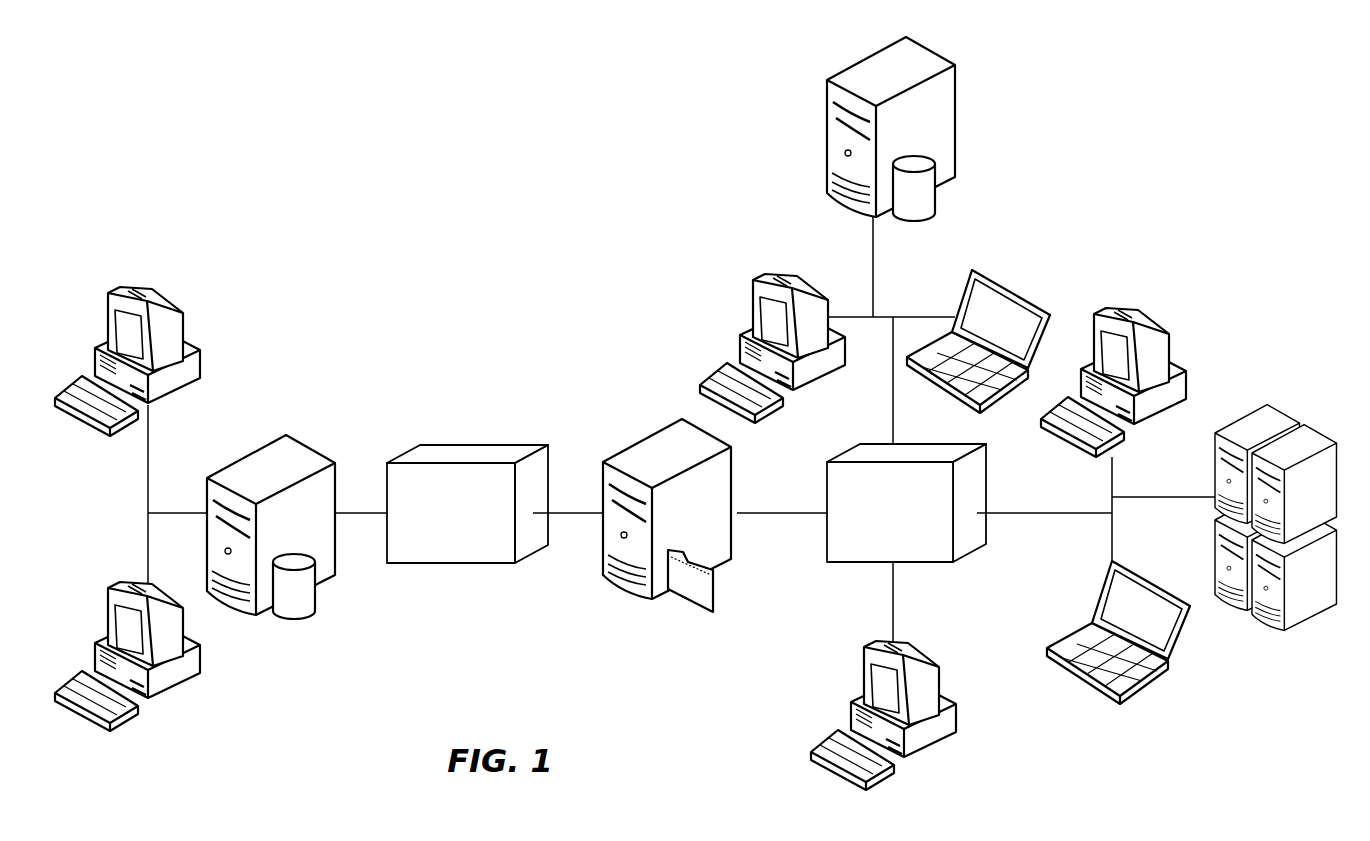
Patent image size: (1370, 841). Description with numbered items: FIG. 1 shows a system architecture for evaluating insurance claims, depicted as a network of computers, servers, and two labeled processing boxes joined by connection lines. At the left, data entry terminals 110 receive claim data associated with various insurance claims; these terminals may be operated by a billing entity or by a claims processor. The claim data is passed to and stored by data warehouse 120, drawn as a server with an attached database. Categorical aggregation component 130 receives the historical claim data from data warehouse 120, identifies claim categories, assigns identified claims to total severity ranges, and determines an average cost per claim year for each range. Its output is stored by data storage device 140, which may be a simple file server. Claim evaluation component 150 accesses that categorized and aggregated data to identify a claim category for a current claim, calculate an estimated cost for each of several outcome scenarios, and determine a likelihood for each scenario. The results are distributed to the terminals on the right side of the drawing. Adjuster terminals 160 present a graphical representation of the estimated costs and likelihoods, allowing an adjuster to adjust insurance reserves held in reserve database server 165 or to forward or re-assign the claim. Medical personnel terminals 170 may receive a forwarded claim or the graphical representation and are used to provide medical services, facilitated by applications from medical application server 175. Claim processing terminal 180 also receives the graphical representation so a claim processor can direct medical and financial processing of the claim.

The data entry terminals 110 is at (160, 274).
The data warehouse 120 is at (290, 457).
The categorical aggregation component 130 is at (455, 452).
The data storage device 140 is at (668, 448).
The claim evaluation component 150 is at (848, 566).
The adjuster terminals 160 is at (700, 330).
The reserve database server 165 is at (823, 125).
The medical personnel terminals 170 is at (1140, 290).
The medical application server 175 is at (1265, 425).
The claim processing terminal 180 is at (935, 745).